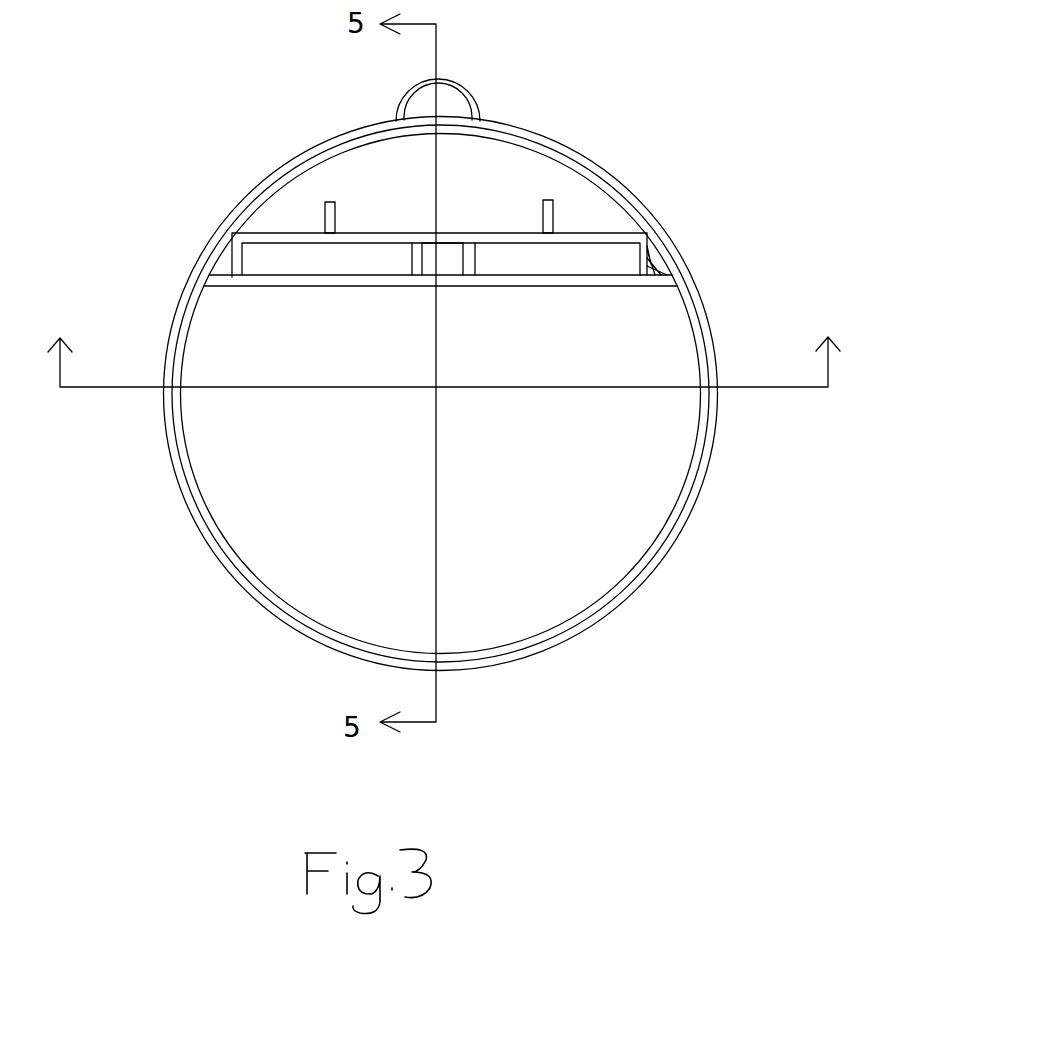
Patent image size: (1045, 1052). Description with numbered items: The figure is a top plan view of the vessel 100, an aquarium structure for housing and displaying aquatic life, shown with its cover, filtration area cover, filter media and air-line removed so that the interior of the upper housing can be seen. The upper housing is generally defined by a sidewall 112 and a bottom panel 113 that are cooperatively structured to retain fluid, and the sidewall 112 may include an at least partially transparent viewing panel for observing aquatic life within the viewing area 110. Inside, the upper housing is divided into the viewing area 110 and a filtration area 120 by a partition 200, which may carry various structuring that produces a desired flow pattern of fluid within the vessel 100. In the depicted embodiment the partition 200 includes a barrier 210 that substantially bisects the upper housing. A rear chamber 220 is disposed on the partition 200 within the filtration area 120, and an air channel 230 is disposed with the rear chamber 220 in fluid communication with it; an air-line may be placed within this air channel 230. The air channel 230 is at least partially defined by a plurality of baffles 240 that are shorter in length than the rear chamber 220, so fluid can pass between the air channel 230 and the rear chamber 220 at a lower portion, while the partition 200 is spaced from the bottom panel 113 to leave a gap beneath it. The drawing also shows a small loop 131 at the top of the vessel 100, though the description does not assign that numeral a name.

The vessel 100 is at (850, 128).
The viewing area 110 is at (216, 502).
The sidewall 112 is at (712, 518).
The bottom panel 113 is at (640, 503).
The filtration area 120 is at (552, 178).
The hanger loop 131 is at (462, 100).
The partition 200 is at (670, 264).
The barrier 210 is at (550, 284).
The rear chamber 220 is at (306, 252).
The air channel 230 is at (450, 253).
The baffles 240 is at (408, 263).